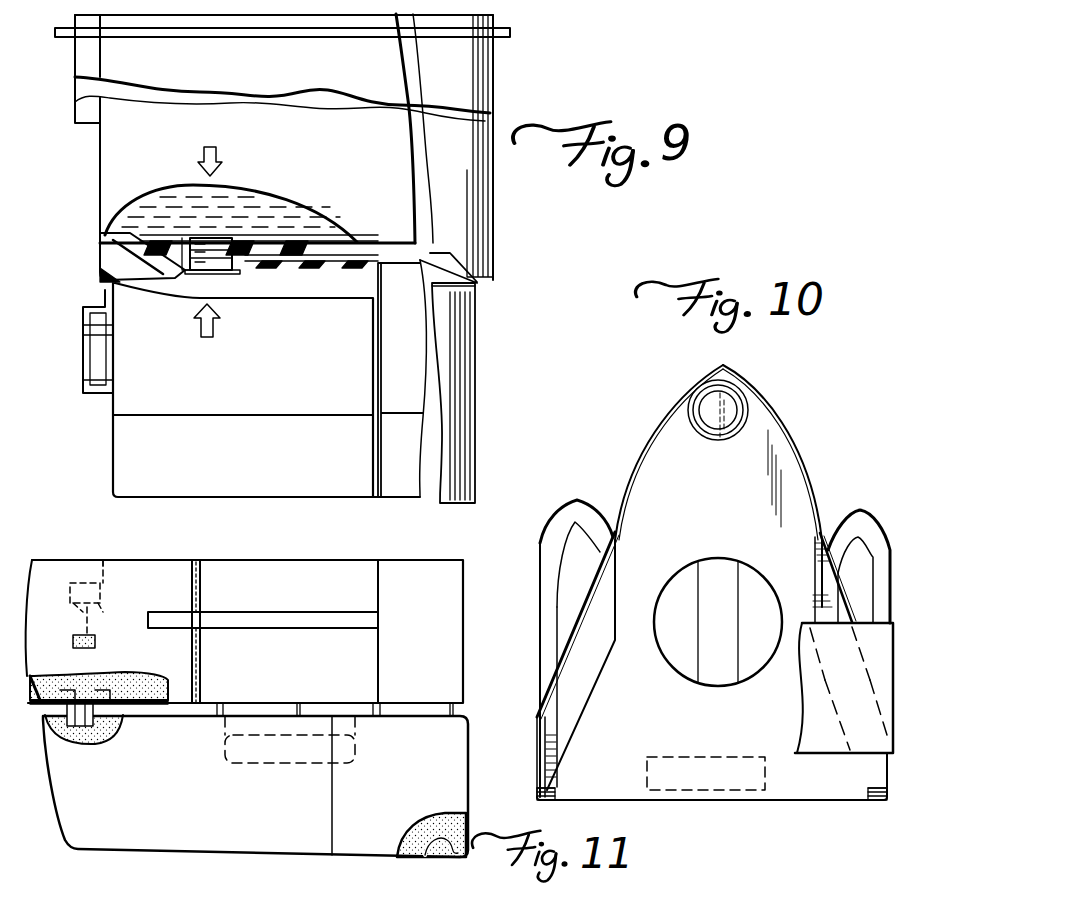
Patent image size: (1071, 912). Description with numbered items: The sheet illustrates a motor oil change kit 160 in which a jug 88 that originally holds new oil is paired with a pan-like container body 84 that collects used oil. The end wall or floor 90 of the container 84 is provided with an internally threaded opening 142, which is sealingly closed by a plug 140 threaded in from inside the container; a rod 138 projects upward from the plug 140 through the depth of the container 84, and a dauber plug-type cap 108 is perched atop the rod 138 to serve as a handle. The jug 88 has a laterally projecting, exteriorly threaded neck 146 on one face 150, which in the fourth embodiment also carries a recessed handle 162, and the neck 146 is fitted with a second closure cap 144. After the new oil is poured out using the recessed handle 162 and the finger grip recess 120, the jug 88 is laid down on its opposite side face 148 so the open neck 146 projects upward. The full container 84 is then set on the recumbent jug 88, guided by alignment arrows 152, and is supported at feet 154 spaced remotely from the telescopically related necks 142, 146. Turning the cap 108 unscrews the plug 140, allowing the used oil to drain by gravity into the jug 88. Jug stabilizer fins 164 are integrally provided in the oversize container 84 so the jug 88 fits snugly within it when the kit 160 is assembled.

In FIG. 9, the pan-like container body 84 is at (493, 128).
In FIG. 10, the pan-like container body 84 is at (537, 730).
In FIG. 11, the pan-like container body 84 is at (425, 604).
In FIG. 9, the jug 88 is at (476, 383).
In FIG. 10, the jug 88 is at (740, 508).
In FIG. 11, the jug 88 is at (160, 804).
In FIG. 9, the internally threaded opening 142 is at (193, 245).
In FIG. 11, the internally threaded opening 142 is at (62, 676).
In FIG. 9, the second closure cap 144 is at (83, 343).
In FIG. 9, the exteriorly threaded neck 146 is at (262, 243).
In FIG. 11, the exteriorly threaded neck 146 is at (113, 706).
In FIG. 9, the alignment arrows 152 is at (212, 165).
In FIG. 9, the feet 154 is at (100, 262).
In FIG. 10, the motor oil change kit 160 is at (624, 454).
In FIG. 10, the dauber plug-type cap 108 is at (728, 405).
In FIG. 11, the dauber plug-type cap 108 is at (103, 562).
In FIG. 10, the face 150 is at (790, 455).
In FIG. 11, the face 150 is at (397, 715).
In FIG. 10, the recessed handle 162 is at (703, 650).
In FIG. 10, the jug stabilizer fins 164 is at (537, 788).
In FIG. 11, the rod 138 is at (82, 615).
In FIG. 11, the plug 140 is at (102, 630).
In FIG. 11, the end wall 90 is at (140, 703).
In FIG. 11, the opposite side face 148 is at (282, 857).
In FIG. 11, the finger grip recess 120 is at (465, 833).